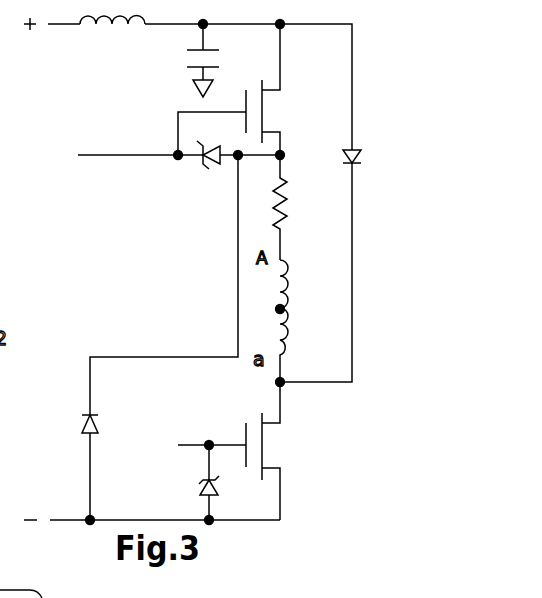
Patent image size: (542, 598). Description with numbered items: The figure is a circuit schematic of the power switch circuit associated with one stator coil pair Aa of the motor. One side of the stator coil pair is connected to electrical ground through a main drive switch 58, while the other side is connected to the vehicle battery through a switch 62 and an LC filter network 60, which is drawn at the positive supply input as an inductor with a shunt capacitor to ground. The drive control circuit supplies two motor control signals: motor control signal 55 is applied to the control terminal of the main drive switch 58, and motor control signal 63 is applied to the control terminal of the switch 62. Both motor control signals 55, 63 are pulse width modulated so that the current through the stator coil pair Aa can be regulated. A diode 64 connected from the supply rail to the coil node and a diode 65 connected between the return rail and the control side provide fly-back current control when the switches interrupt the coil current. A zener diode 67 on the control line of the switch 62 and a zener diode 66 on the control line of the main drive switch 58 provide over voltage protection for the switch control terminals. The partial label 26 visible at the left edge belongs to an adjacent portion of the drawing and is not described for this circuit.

The LC filter network 60 is at (108, 36).
The switch 62 is at (273, 113).
The motor control signal 63 is at (112, 158).
The diode 64 is at (360, 163).
The zener diode 67 is at (218, 170).
The diode 65 is at (82, 417).
The motor control signal 55 is at (188, 444).
The zener diode 66 is at (200, 482).
The main drive switch 58 is at (282, 441).
The control circuit 26 is at (15, 297).